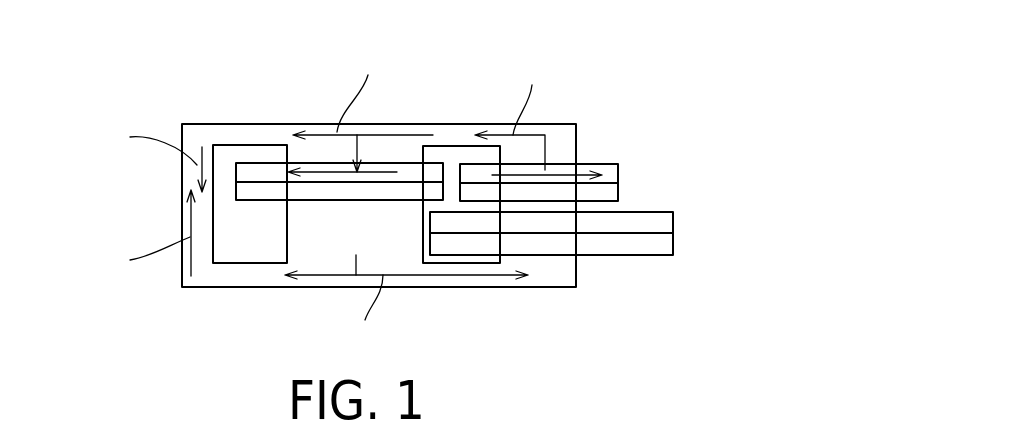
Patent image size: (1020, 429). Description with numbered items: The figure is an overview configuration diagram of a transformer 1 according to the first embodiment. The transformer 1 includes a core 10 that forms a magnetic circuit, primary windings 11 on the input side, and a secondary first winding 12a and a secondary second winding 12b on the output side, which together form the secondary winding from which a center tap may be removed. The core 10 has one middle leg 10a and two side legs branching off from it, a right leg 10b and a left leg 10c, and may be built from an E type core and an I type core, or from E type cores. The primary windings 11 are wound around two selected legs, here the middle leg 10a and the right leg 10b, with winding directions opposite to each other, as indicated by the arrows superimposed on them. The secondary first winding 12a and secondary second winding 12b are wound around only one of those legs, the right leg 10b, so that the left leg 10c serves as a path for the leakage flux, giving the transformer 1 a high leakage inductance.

The transformer 1 is at (56, 30).
The core 10 is at (287, 99).
The middle leg 10a is at (402, 147).
The right leg 10b is at (562, 142).
The left leg 10c is at (197, 133).
The primary windings 11 is at (235, 193).
The secondary first winding 12a is at (658, 212).
The secondary second winding 12b is at (648, 257).